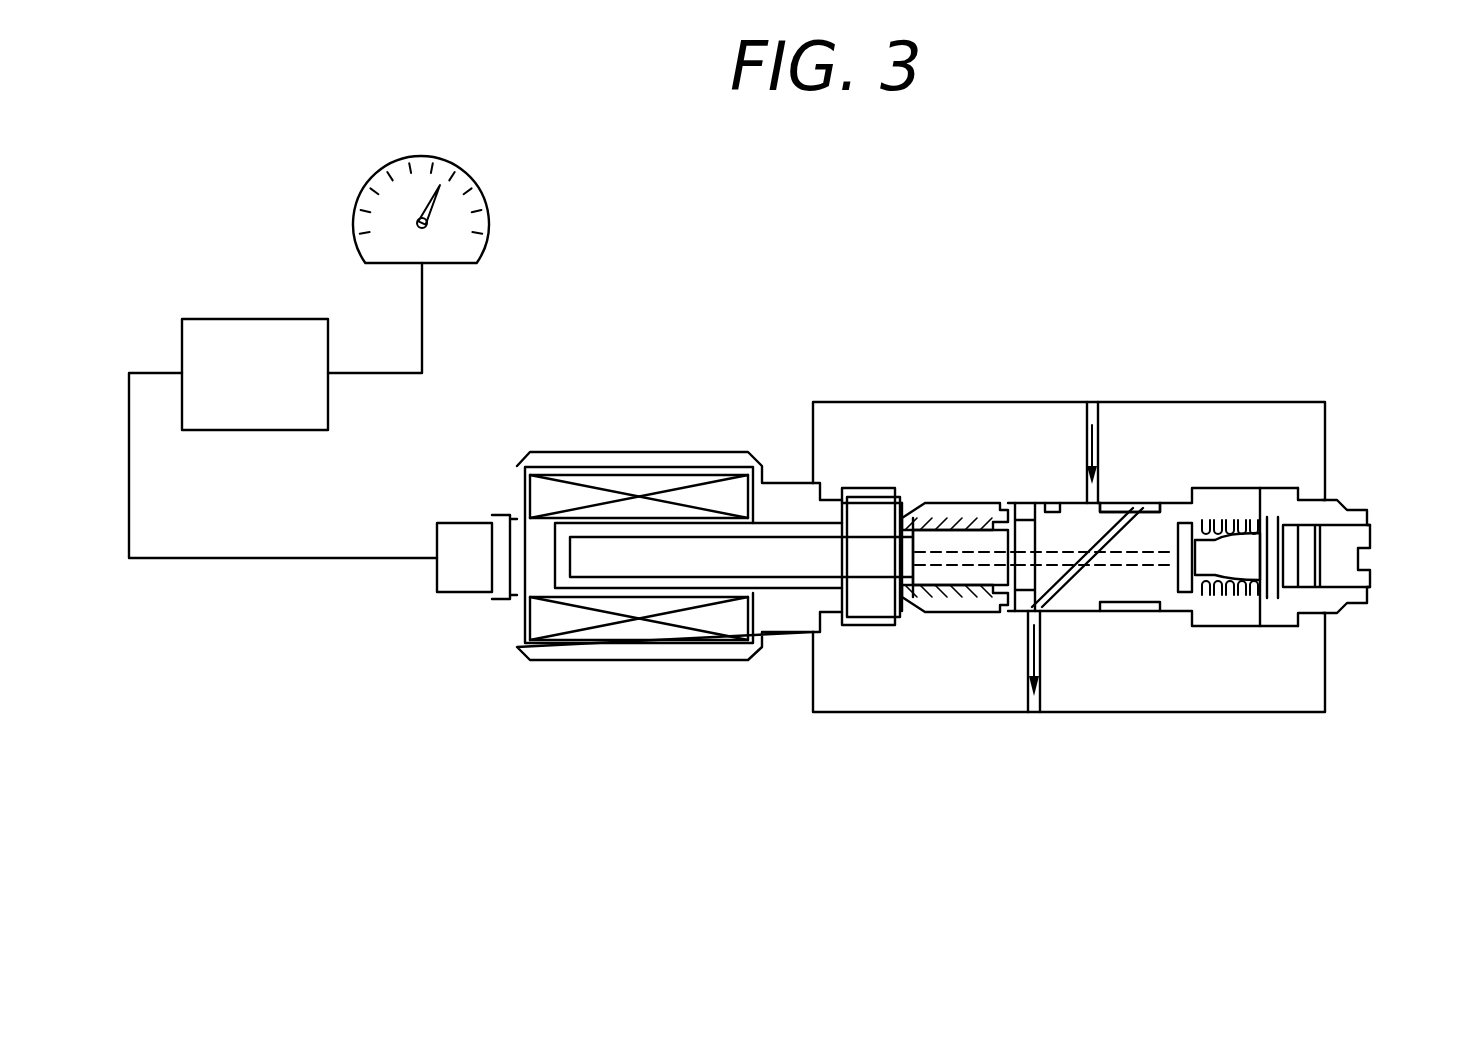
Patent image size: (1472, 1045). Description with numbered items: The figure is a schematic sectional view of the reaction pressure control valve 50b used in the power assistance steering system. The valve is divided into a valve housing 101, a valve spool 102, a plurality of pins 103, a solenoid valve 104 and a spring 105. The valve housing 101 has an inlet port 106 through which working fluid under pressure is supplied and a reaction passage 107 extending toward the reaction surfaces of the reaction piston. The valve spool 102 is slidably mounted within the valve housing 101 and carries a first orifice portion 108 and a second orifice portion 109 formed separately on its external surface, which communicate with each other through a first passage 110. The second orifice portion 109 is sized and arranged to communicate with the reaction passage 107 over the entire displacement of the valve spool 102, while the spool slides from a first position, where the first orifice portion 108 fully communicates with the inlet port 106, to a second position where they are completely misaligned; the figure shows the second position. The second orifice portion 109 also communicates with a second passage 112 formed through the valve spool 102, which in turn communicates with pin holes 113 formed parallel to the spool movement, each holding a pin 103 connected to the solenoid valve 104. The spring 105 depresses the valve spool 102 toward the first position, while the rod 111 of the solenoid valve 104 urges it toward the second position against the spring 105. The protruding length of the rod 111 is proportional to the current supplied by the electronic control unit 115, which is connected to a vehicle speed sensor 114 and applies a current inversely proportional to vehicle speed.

The reaction pressure control valve 50b is at (1382, 340).
The valve housing 101 is at (1278, 440).
The valve spool 102 is at (1133, 593).
The pins 103 is at (943, 597).
The solenoid valve 104 is at (787, 612).
The spring 105 is at (1240, 640).
The inlet port 106 is at (1088, 430).
The reaction passage 107 is at (1035, 712).
The first orifice portion 108 is at (1142, 510).
The second orifice portion 109 is at (1027, 500).
The first passage 110 is at (1070, 580).
The rod 111 is at (907, 557).
The second passage 112 is at (1015, 595).
The pin holes 113 is at (975, 525).
The vehicle speed sensor 114 is at (437, 156).
The electronic control unit 115 is at (247, 319).